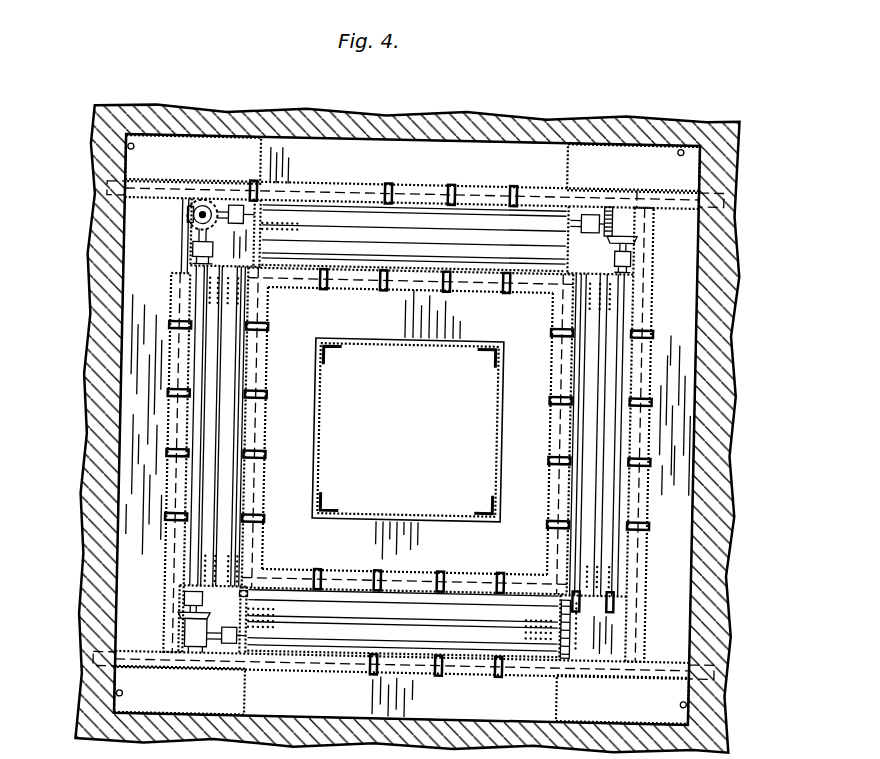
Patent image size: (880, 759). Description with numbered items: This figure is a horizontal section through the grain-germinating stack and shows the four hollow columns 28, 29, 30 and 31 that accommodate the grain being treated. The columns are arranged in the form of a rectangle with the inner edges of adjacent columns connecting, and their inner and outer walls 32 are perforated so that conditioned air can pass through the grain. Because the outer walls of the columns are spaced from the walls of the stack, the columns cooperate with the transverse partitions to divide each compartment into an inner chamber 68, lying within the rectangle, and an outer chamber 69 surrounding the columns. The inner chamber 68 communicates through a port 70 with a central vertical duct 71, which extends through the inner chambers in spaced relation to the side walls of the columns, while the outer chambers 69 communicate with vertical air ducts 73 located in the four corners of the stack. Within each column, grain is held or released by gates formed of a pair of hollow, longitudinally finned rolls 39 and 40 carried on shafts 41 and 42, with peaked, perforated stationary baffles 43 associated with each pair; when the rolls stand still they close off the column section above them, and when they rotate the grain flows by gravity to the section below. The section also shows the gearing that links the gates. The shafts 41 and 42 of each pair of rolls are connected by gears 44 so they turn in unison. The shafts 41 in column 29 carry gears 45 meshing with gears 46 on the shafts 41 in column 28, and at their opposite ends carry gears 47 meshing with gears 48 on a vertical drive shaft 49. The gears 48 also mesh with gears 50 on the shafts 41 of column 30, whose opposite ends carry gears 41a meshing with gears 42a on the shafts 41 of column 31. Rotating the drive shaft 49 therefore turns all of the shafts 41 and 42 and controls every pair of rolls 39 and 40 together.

The hollow column 28 is at (375, 576).
The hollow column 29 is at (245, 431).
The hollow column 30 is at (364, 272).
The hollow column 31 is at (566, 374).
The inner and outer walls 32 is at (635, 574).
The finned roll 39 is at (367, 186).
The finned roll 40 is at (406, 257).
The shaft 41 is at (584, 211).
The gear 41a is at (620, 232).
The shaft 42 is at (611, 254).
The gear 42a is at (632, 186).
The stationary baffle 43 is at (471, 230).
The gear 44 is at (283, 243).
The gear 45 is at (186, 629).
The gear 46 is at (214, 652).
The gear 47 is at (186, 236).
The gear 48 is at (205, 204).
The vertical drive shaft 49 is at (196, 204).
The gear 50 is at (219, 207).
The inner chamber 68 is at (468, 318).
The outer chamber 69 is at (514, 163).
The port 70 is at (458, 162).
The central vertical duct 71 is at (486, 474).
The vertical air duct 73 is at (118, 153).